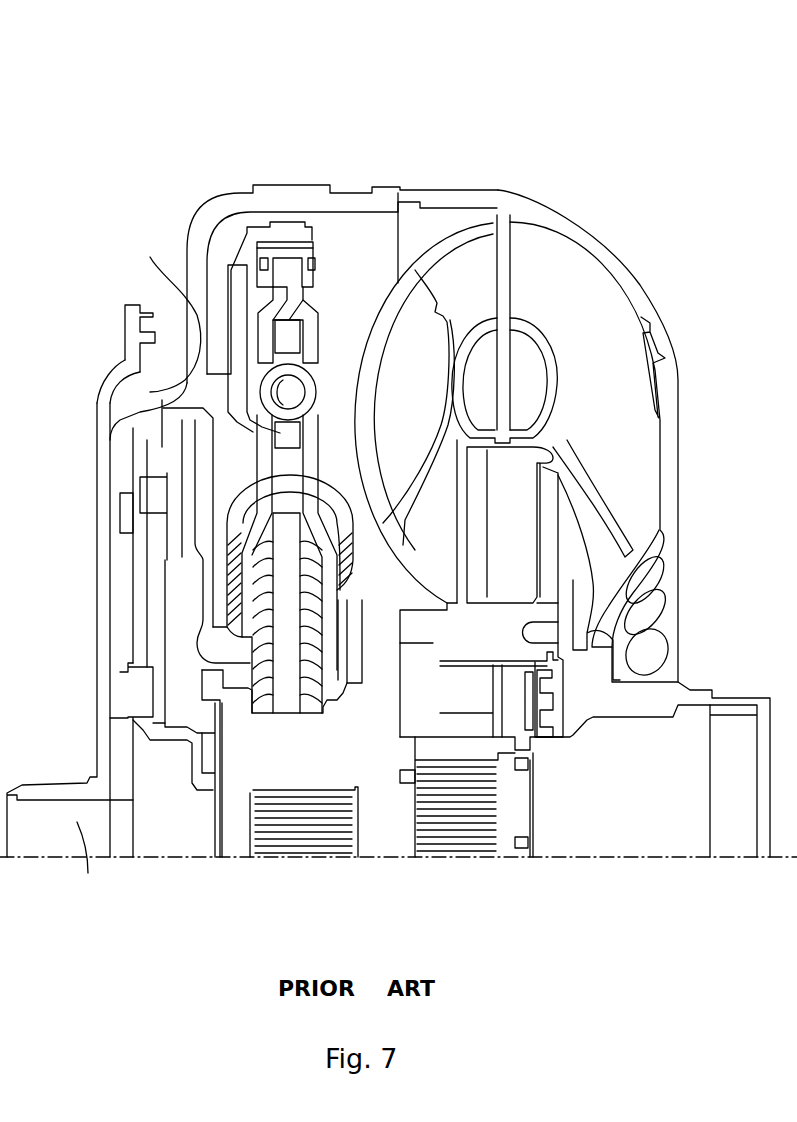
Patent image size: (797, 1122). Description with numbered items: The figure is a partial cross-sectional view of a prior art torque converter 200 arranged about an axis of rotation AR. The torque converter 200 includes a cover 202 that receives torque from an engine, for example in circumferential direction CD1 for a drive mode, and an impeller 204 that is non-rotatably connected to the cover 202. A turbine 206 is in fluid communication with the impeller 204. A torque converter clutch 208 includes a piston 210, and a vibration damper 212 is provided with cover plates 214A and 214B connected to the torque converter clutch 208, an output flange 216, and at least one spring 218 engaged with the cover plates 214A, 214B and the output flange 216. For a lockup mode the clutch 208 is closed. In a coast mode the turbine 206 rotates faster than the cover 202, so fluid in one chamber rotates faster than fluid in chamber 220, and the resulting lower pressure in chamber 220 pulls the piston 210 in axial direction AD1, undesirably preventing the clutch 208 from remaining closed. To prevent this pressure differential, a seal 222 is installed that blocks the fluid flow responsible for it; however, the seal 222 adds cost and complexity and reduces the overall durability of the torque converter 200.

The torque converter 200 is at (625, 70).
The cover 202 is at (232, 250).
The impeller 204 is at (558, 215).
The turbine 206 is at (468, 230).
The torque converter clutch 208 is at (193, 288).
The piston 210 is at (243, 282).
The vibration damper 212 is at (328, 267).
The cover plate 214A is at (310, 417).
The cover plate 214B is at (265, 427).
The output flange 216 is at (290, 693).
The spring 218 is at (370, 247).
The chamber 220 is at (173, 640).
The seal 222 is at (267, 428).
The axis of rotation AR is at (637, 860).
The circumferential direction CD1 is at (86, 889).
The axial direction AD1 is at (7, 1005).